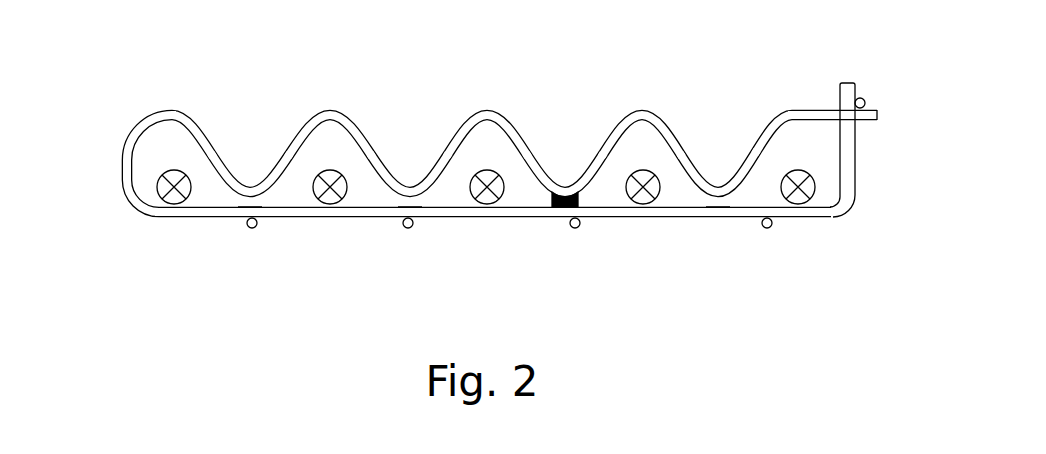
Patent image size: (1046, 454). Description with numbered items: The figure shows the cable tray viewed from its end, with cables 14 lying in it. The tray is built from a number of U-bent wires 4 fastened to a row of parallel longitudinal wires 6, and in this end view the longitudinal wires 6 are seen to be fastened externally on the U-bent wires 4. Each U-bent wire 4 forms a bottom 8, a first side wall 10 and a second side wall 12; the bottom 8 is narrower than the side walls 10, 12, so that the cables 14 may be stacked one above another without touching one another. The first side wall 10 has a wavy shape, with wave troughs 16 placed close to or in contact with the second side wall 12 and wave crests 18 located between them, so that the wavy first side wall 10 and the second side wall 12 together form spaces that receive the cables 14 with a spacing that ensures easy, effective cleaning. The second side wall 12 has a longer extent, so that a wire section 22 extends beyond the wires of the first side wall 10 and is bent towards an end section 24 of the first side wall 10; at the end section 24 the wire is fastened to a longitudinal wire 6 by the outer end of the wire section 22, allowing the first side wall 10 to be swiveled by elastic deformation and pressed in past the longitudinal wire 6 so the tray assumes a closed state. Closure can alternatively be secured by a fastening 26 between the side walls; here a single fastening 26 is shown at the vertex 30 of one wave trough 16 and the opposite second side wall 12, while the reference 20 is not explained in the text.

The U-bent wire 4 is at (495, 180).
The longitudinal wire 6 is at (862, 95).
The bottom 8 is at (118, 153).
The first side wall 10 is at (418, 152).
The second side wall 12 is at (465, 257).
The cable 14 is at (160, 190).
The wave trough 16 is at (280, 199).
The wave crest 18 is at (365, 84).
The cavity 20 is at (157, 152).
The wire section 22 is at (862, 172).
The end section 24 is at (820, 93).
The fastening 26 is at (560, 203).
The vertex 30 is at (262, 208).